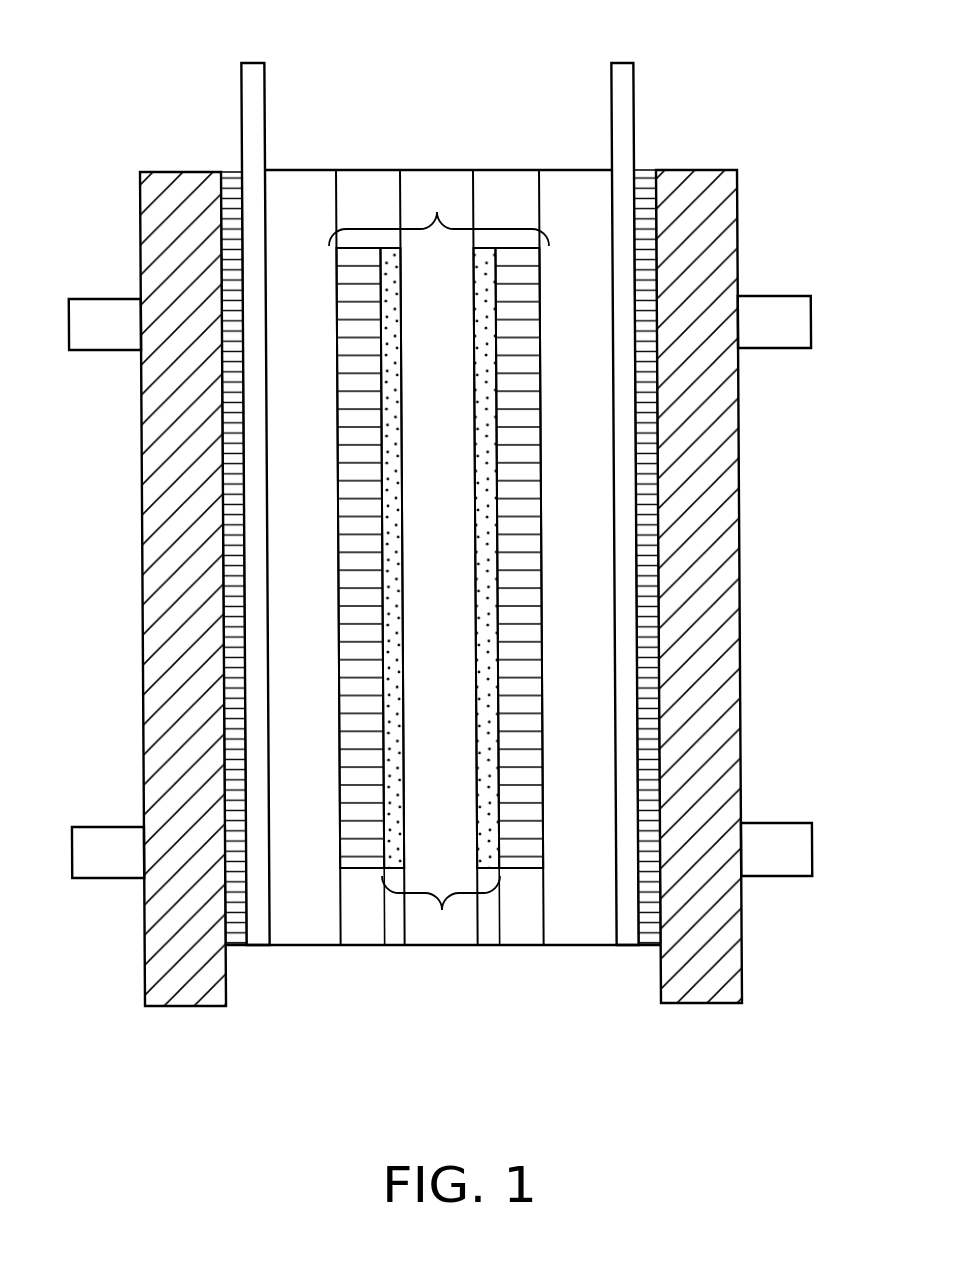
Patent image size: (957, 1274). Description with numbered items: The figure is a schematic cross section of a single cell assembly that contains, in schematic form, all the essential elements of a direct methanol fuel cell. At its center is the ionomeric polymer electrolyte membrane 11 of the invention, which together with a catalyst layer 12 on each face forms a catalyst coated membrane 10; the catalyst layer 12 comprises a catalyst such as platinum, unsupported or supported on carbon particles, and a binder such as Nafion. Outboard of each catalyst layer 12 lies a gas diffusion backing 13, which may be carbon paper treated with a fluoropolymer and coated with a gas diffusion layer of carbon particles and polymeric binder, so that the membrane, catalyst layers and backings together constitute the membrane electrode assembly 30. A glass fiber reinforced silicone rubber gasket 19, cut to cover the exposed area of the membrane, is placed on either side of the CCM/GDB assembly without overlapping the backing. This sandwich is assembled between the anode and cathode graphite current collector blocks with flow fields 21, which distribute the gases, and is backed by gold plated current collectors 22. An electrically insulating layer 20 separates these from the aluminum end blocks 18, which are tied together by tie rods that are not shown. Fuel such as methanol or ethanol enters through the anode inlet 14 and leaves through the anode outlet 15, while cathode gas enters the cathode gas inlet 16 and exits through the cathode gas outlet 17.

The catalyst coated membrane 10 is at (442, 910).
The ionomeric polymer electrolyte membrane 11 is at (420, 182).
The catalyst layer 12 is at (397, 860).
The gas diffusion backing 13 is at (367, 863).
The anode inlet 14 is at (788, 295).
The anode outlet 15 is at (792, 828).
The cathode gas inlet 16 is at (98, 298).
The cathode gas outlet 17 is at (99, 830).
The aluminum end block 18 is at (157, 585).
The gasket 19 is at (375, 182).
The electrically insulating layer 20 is at (233, 168).
The graphite current collector block with flow field 21 is at (307, 912).
The gold plated current collector 22 is at (255, 63).
The membrane electrode assembly 30 is at (437, 207).